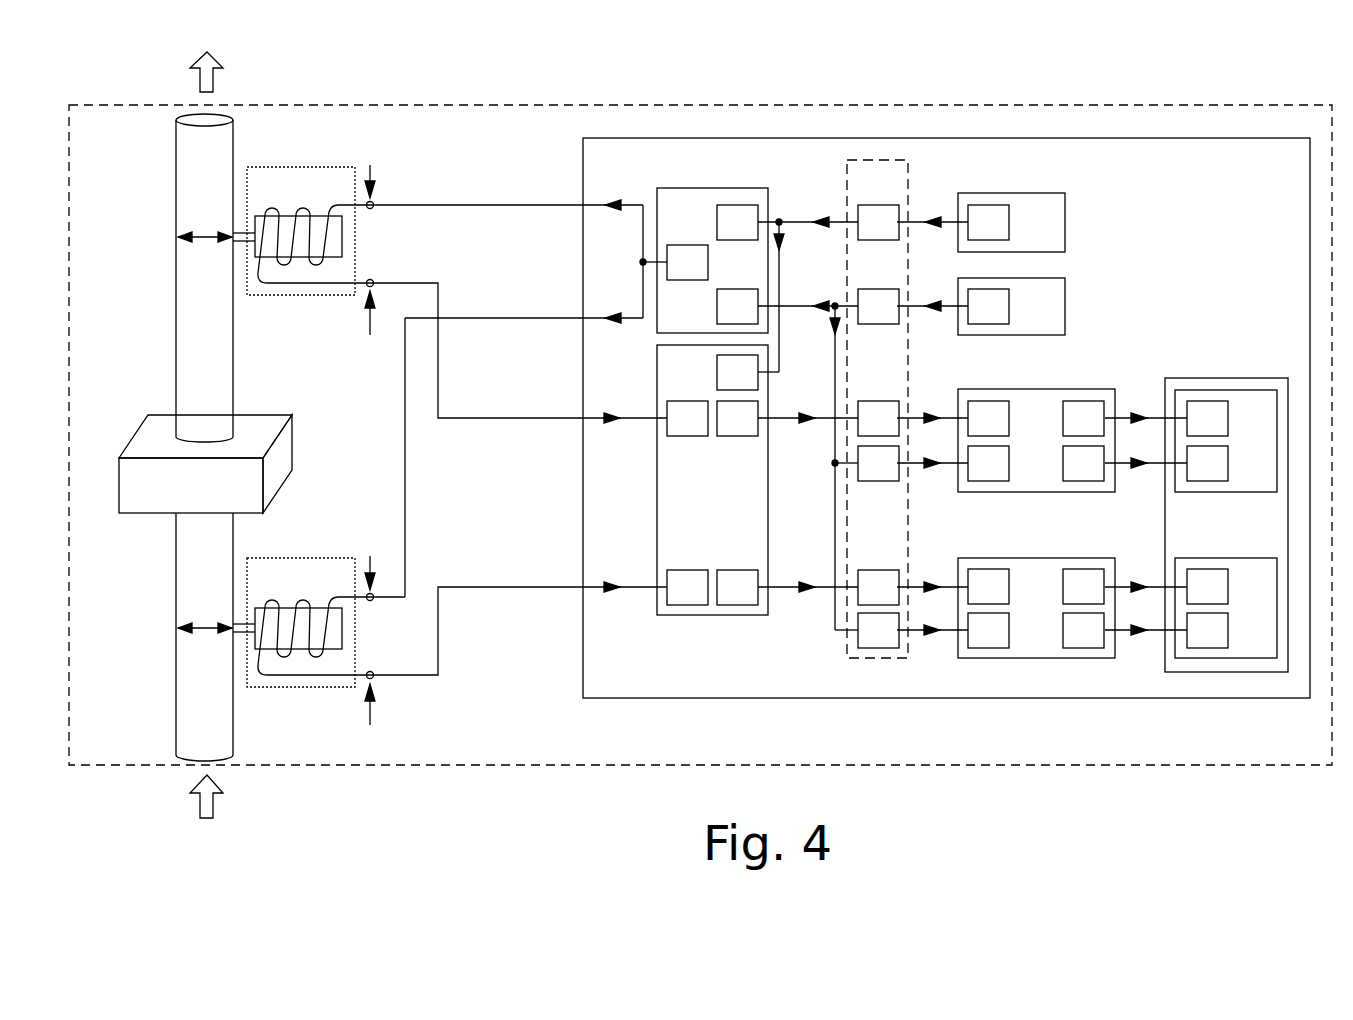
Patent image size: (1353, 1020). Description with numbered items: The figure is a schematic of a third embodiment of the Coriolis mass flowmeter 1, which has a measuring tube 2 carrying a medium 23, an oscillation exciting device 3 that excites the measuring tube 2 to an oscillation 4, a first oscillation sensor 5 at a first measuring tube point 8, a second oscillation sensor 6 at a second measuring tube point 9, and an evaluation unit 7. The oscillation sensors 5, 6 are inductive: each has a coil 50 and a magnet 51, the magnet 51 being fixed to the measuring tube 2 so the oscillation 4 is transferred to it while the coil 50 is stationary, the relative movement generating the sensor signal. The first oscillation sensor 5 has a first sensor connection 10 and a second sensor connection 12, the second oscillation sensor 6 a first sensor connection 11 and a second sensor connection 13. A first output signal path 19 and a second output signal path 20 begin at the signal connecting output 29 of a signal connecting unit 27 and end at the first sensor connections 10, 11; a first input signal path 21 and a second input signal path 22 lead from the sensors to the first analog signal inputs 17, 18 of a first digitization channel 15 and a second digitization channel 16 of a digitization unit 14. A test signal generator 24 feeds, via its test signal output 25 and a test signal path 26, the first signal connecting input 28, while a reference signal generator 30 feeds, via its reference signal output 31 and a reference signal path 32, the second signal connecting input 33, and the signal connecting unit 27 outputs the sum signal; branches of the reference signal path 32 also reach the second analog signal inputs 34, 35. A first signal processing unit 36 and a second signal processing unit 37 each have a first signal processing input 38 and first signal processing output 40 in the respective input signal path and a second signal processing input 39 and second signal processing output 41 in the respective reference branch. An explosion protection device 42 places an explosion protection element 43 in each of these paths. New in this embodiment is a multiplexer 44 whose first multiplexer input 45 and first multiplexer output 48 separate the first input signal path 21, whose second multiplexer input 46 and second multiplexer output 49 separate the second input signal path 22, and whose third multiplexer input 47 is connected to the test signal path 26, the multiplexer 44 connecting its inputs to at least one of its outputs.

The Coriolis mass flowmeter 1 is at (80, 141).
The measuring tube 2 is at (205, 342).
The oscillation exciting device 3 is at (235, 491).
The oscillation 4 is at (207, 232).
The first oscillation sensor 5 is at (330, 203).
The second oscillation sensor 6 is at (330, 593).
The evaluation unit 7 is at (1285, 175).
The first measuring tube point 8 is at (178, 237).
The second measuring tube point 9 is at (178, 628).
The first sensor connection 10 is at (371, 166).
The first sensor connection 11 is at (371, 557).
The second sensor connection 12 is at (371, 329).
The second sensor connection 13 is at (371, 722).
The digitization unit 14 is at (1247, 528).
The first digitization channel 15 is at (1237, 426).
The second digitization channel 16 is at (1237, 593).
The first analog signal input 17 is at (1193, 431).
The first analog signal input 18 is at (1193, 599).
The first output signal path 19 is at (503, 205).
The second output signal path 20 is at (503, 318).
The first input signal path 21 is at (503, 418).
The second input signal path 22 is at (503, 587).
The medium 23 is at (207, 435).
The test signal generator 24 is at (1023, 231).
The test signal output 25 is at (975, 235).
The test signal path 26 is at (812, 222).
The signal connecting unit 27 is at (667, 225).
The first signal connecting input 28 is at (724, 235).
The signal connecting output 29 is at (674, 275).
The reference signal generator 30 is at (1023, 316).
The reference signal output 31 is at (975, 319).
The reference signal path 32 is at (812, 306).
The second signal connecting input 33 is at (724, 319).
The second analog signal input 34 is at (1193, 476).
The second analog signal input 35 is at (1193, 643).
The first signal processing unit 36 is at (1025, 428).
The second signal processing unit 37 is at (1025, 595).
The first signal processing input 38 is at (975, 431).
The second signal processing input 39 is at (975, 476).
The first signal processing output 40 is at (1070, 431).
The second signal processing output 41 is at (1070, 476).
The explosion protection device 42 is at (867, 196).
The explosion protection element 43 is at (864, 235).
The multiplexer 44 is at (667, 383).
The first multiplexer input 45 is at (674, 431).
The second multiplexer input 46 is at (674, 600).
The third multiplexer input 47 is at (724, 385).
The first multiplexer output 48 is at (724, 431).
The second multiplexer output 49 is at (724, 600).
The coil 50 is at (290, 268).
The magnet 51 is at (283, 262).